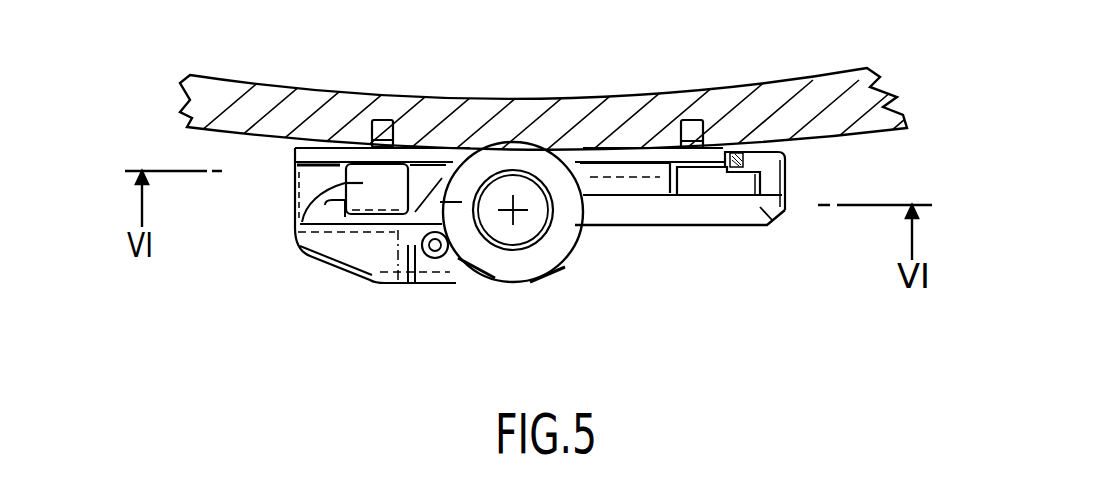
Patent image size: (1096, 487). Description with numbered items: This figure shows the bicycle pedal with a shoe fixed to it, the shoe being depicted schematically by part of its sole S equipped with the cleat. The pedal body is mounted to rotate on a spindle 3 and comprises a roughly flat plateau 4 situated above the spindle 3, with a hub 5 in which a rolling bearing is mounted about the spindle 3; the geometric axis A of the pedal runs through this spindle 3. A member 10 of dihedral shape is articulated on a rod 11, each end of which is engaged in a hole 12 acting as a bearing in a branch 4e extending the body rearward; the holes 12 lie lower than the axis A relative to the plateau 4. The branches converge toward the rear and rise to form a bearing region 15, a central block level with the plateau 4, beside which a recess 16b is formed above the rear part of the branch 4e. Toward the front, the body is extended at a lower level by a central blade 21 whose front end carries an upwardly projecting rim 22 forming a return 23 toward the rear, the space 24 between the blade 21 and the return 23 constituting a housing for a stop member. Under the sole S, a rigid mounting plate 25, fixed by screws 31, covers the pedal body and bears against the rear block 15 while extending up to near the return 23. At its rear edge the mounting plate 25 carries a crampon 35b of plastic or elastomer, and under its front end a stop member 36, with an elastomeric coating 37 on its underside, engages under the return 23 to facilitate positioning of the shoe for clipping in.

The sole S is at (236, 94).
The screws 31 is at (383, 124).
The member 10 is at (418, 149).
The mounting plate 25 is at (450, 153).
The plateau 4 is at (610, 160).
The return 23 is at (735, 150).
The bearing region 15 is at (297, 191).
The crampon 35b is at (322, 187).
The recess 16b is at (322, 200).
The branch 4e is at (383, 262).
The hole 12 is at (420, 253).
The rod 11 is at (437, 258).
The geometric axis A is at (500, 245).
The hub 5 is at (540, 260).
The spindle 3 is at (541, 218).
The central blade 21 is at (657, 210).
The coating 37 is at (707, 196).
The stop member 36 is at (731, 181).
The space 24 is at (762, 173).
The rim 22 is at (760, 172).